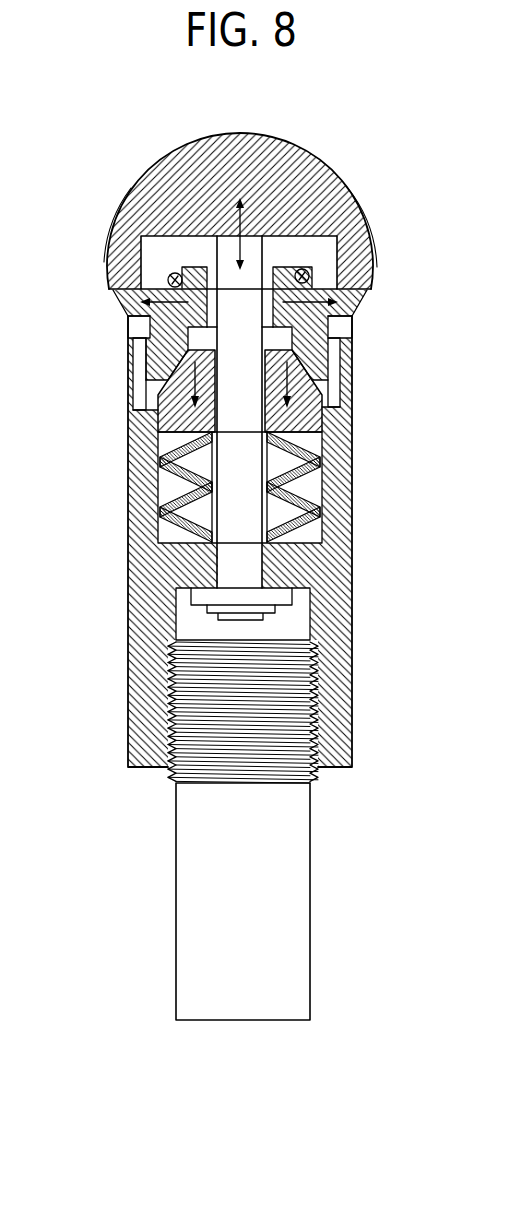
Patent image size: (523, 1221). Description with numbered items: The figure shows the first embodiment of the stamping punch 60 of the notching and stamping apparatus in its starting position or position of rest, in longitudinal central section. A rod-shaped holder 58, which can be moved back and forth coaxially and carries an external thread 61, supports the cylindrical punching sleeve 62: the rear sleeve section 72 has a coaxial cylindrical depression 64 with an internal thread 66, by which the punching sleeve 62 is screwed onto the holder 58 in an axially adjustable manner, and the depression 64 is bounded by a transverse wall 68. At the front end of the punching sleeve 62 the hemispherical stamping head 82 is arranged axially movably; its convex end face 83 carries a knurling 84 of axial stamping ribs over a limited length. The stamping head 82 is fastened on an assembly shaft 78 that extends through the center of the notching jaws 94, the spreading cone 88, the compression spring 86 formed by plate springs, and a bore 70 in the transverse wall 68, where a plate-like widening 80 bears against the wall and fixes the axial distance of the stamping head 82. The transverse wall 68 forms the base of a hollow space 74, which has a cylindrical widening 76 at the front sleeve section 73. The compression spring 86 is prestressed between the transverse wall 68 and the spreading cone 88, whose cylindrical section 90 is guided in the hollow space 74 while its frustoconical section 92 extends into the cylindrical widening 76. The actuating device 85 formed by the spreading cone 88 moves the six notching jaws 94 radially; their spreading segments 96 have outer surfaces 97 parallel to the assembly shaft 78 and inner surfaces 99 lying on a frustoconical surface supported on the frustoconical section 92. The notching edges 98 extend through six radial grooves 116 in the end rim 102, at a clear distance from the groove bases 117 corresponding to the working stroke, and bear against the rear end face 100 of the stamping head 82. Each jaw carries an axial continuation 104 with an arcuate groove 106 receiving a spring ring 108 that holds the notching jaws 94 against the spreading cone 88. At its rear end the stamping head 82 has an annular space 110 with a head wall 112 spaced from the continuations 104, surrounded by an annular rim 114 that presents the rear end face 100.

The holder 58 is at (190, 947).
The stamping punch 60 is at (148, 128).
The external thread 61 is at (172, 784).
The punching sleeve 62 is at (126, 684).
The cylindrical depression 64 is at (306, 628).
The internal thread 66 is at (172, 652).
The transverse wall 68 is at (182, 553).
The bore 70 is at (328, 560).
The rear sleeve section 72 is at (142, 738).
The front sleeve section 73 is at (338, 456).
The hollow space 74 is at (320, 496).
The cylindrical widening 76 is at (350, 408).
The assembly shaft 78 is at (226, 573).
The plate-like widening 80 is at (292, 598).
The stamping head 82 is at (245, 148).
The end face 83 is at (297, 147).
The knurling 84 is at (127, 190).
The actuating device 85 is at (158, 442).
The compression spring 86 is at (166, 500).
The spreading cone 88 is at (325, 442).
The cylindrical section 90 is at (150, 420).
The frustoconical section 92 is at (160, 400).
The notching jaws 94 is at (102, 307).
The spreading segments 96 is at (160, 372).
The outer surfaces 97 is at (150, 333).
The notching edges 98 is at (115, 306).
The inner surfaces 99 is at (163, 356).
The rear end face 100 is at (363, 293).
The end rim 102 is at (356, 318).
The axial continuation 104 is at (190, 266).
The arcuate grooves 106 is at (347, 217).
The spring ring 108 is at (333, 267).
The annular space 110 is at (196, 234).
The head wall 112 is at (288, 262).
The annular rim 114 is at (111, 282).
The radial grooves 116 is at (342, 330).
The groove base 117 is at (345, 350).